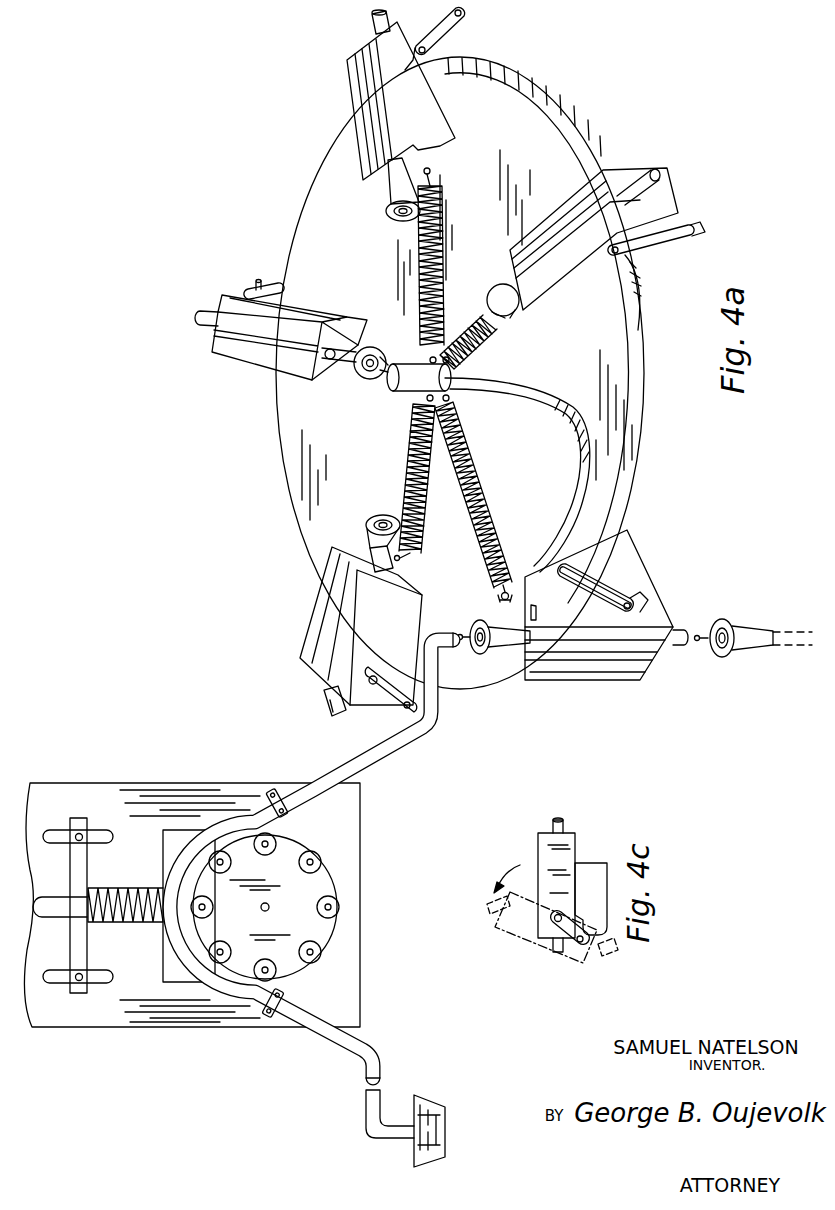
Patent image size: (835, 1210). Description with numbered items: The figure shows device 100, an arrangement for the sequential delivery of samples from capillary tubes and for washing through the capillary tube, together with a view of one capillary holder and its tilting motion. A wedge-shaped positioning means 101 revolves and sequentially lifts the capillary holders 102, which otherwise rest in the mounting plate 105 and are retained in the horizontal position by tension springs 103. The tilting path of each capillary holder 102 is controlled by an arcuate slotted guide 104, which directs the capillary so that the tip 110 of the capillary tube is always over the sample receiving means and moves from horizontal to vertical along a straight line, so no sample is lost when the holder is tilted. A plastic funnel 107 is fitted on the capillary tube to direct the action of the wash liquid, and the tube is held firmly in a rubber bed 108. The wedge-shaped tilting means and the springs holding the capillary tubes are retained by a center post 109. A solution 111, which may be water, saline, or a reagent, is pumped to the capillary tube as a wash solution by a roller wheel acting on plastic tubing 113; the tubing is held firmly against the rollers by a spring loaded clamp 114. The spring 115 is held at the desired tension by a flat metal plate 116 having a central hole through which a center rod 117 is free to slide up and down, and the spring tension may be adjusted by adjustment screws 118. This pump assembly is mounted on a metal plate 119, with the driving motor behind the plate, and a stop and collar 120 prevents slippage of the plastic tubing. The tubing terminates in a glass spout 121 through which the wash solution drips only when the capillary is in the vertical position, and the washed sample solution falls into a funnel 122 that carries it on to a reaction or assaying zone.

In FIG. 4A, the device 100 is at (318, 184).
In FIG. 4A, the wedge-shaped positioning means 101 is at (552, 470).
In FIG. 4A, the capillary holder 102 is at (543, 587).
In FIG. 4A, the tension spring 103 is at (480, 544).
In FIG. 4A, the arcuate slotted guide 104 is at (600, 590).
In FIG. 4A, the mounting plate 105 is at (614, 310).
In FIG. 4A, the plastic funnel 107 is at (388, 218).
In FIG. 4A, the rubber bed 108 is at (578, 660).
In FIG. 4A, the center post 109 is at (412, 360).
In FIG. 4C, the tip of the capillary tube 110 is at (603, 950).
In FIG. 4A, the solution 111 is at (443, 1123).
In FIG. 4A, the plastic tubing 113 is at (257, 817).
In FIG. 4A, the spring loaded clamp 114 is at (167, 938).
In FIG. 4A, the spring 115 is at (119, 888).
In FIG. 4A, the flat metal plate 116 is at (77, 867).
In FIG. 4A, the center rod 117 is at (60, 912).
In FIG. 4A, the adjustment screws 118 is at (78, 837).
In FIG. 4A, the metal plate 119 is at (353, 953).
In FIG. 4A, the stop and collar 120 is at (276, 795).
In FIG. 4A, the glass spout 121 is at (432, 632).
In FIG. 4A, the funnel 122 is at (740, 655).